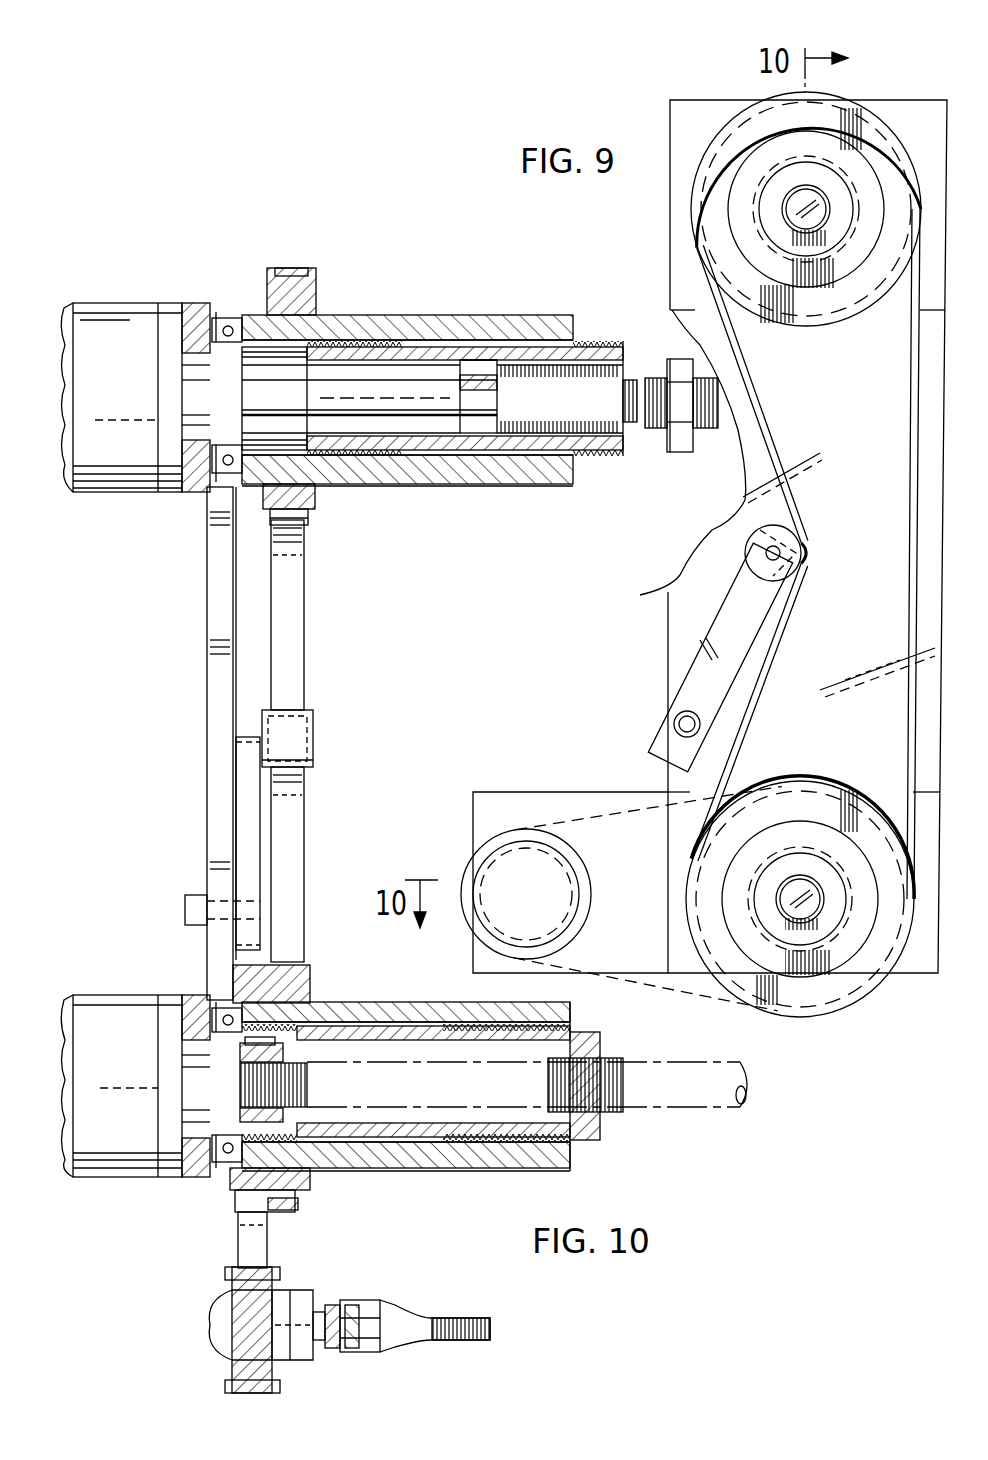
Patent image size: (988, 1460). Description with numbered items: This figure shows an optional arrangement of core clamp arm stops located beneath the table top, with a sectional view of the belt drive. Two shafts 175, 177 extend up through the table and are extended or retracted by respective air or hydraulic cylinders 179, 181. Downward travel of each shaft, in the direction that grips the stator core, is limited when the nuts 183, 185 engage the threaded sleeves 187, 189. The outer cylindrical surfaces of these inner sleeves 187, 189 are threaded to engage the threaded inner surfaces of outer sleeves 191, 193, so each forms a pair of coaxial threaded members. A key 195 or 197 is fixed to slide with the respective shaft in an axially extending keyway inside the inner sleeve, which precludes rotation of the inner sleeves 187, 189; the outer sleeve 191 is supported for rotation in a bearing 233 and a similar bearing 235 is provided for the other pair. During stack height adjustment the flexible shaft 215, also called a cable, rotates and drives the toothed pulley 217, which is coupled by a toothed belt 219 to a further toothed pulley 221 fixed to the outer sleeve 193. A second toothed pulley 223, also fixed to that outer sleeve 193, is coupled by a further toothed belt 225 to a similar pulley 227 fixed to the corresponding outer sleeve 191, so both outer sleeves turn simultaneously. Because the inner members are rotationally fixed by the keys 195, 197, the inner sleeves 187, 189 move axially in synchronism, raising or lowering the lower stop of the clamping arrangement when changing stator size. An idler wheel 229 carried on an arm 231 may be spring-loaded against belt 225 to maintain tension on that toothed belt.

In FIG. 9, the shaft 175 is at (712, 452).
In FIG. 9, the shaft 177 is at (720, 1097).
In FIG. 9, the air or hydraulic cylinder 179 is at (135, 303).
In FIG. 9, the air or hydraulic cylinder 181 is at (108, 995).
In FIG. 9, the nut 183 is at (680, 453).
In FIG. 9, the nut 185 is at (600, 1140).
In FIG. 9, the threaded sleeve 187 is at (598, 470).
In FIG. 9, the threaded sleeve 189 is at (572, 1020).
In FIG. 9, the outer sleeve 191 is at (530, 315).
In FIG. 9, the outer sleeve 193 is at (405, 1003).
In FIG. 9, the key 195 is at (472, 360).
In FIG. 9, the key 197 is at (330, 1015).
In FIG. 9, the flexible shaft 215 is at (470, 1340).
In FIG. 9, the toothed pulley 217 is at (275, 1280).
In FIG. 9, the toothed belt 219 is at (238, 1250).
In FIG. 10, the toothed belt 219 is at (628, 808).
In FIG. 9, the toothed pulley 221 is at (230, 1180).
In FIG. 9, the second toothed pulley 223 is at (307, 1185).
In FIG. 10, the second toothed pulley 223 is at (853, 1008).
In FIG. 9, the toothed belt 225 is at (305, 612).
In FIG. 10, the toothed belt 225 is at (786, 640).
In FIG. 9, the pulley 227 is at (318, 505).
In FIG. 9, the idler wheel 229 is at (315, 728).
In FIG. 10, the idler wheel 229 is at (750, 555).
In FIG. 9, the arm 231 is at (240, 815).
In FIG. 10, the arm 231 is at (700, 670).
In FIG. 9, the bearing 233 is at (232, 318).
In FIG. 9, the bearing 235 is at (222, 1165).